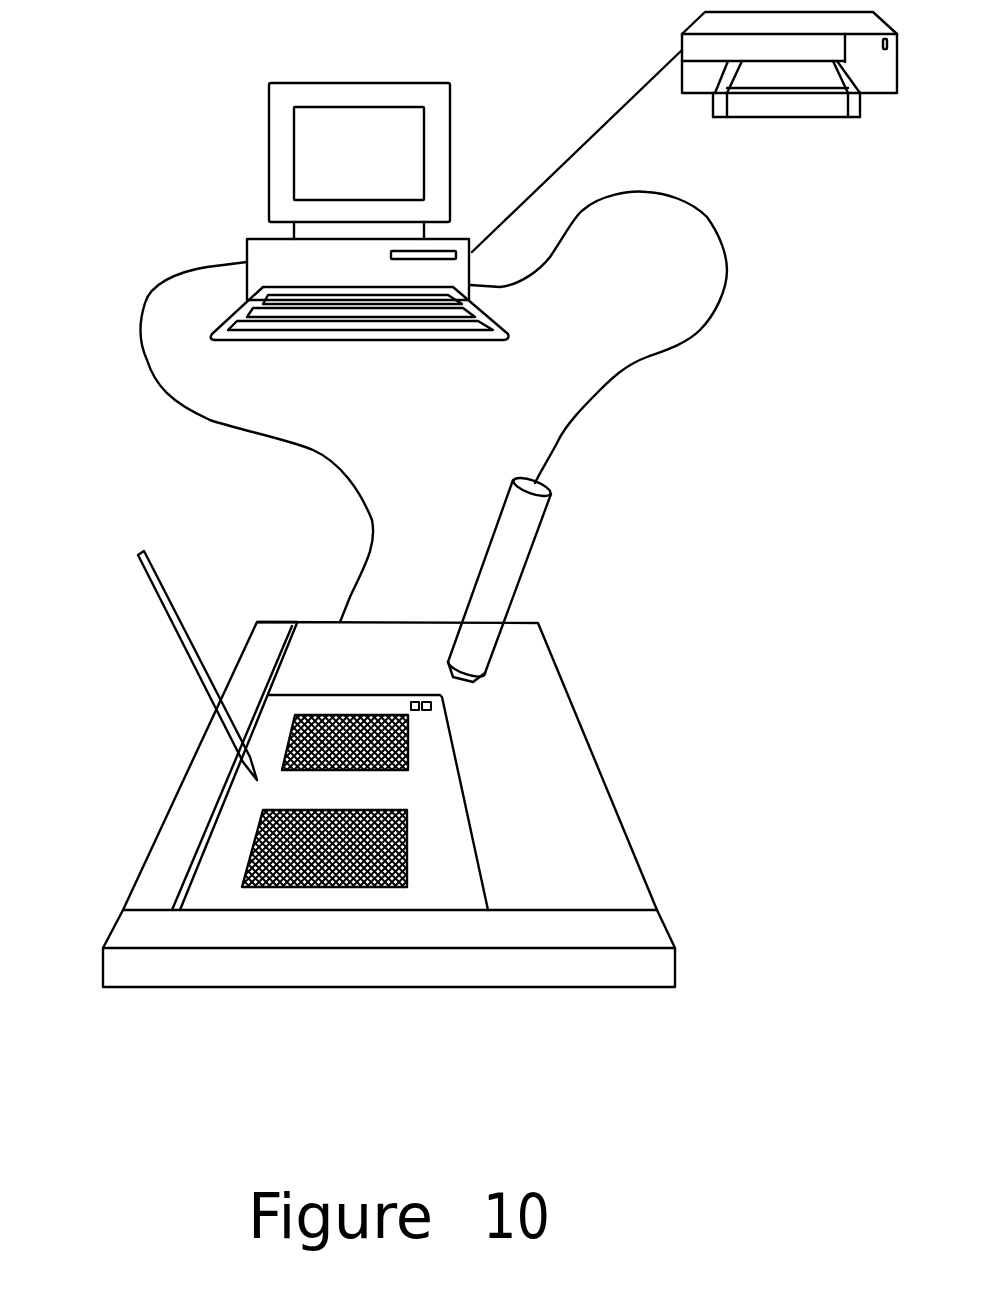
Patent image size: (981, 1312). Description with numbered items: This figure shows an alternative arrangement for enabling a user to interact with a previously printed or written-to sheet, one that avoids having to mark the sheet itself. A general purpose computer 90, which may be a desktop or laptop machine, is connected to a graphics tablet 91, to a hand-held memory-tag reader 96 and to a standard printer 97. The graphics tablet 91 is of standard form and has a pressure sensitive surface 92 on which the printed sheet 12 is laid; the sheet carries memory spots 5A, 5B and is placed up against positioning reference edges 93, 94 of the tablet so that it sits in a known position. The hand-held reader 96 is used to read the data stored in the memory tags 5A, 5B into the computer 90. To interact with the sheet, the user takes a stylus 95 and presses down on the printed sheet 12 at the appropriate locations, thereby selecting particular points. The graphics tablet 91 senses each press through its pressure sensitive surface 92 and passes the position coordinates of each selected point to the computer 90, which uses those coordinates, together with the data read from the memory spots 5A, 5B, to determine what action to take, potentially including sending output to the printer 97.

The general purpose computer 90 is at (267, 259).
The standard printer 97 is at (875, 85).
The hand-held memory-tag reader 96 is at (510, 553).
The stylus 95 is at (168, 612).
The positioning reference edge 93 is at (282, 652).
The pressure sensitive surface 92 is at (575, 752).
The printed sheet 12 is at (472, 833).
The positioning reference edge 94 is at (598, 908).
The graphics tablet 91 is at (399, 771).
The memory spot 5A is at (432, 710).
The memory spot 5B is at (410, 701).